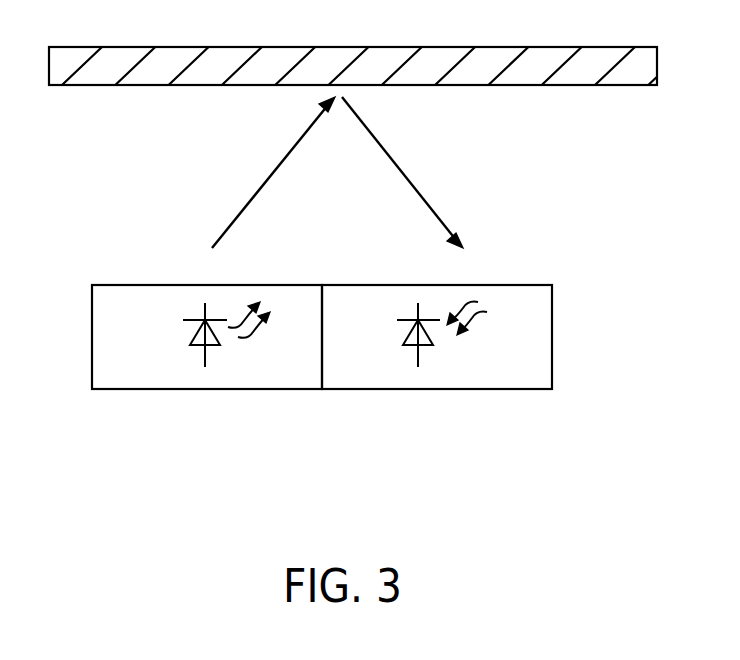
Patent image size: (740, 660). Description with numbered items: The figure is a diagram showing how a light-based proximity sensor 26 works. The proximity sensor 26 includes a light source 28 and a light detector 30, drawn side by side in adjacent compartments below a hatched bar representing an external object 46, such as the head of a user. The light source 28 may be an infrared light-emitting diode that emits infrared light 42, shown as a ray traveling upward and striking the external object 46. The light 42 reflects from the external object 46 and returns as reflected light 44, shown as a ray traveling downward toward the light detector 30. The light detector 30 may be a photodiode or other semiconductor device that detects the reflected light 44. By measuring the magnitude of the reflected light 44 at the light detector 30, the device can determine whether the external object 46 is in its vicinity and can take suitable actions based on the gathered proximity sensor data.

The proximity sensor 26 is at (322, 385).
The light source 28 is at (250, 389).
The light detector 30 is at (472, 389).
The infrared light 42 is at (260, 187).
The reflected light 44 is at (417, 185).
The external object 46 is at (562, 47).